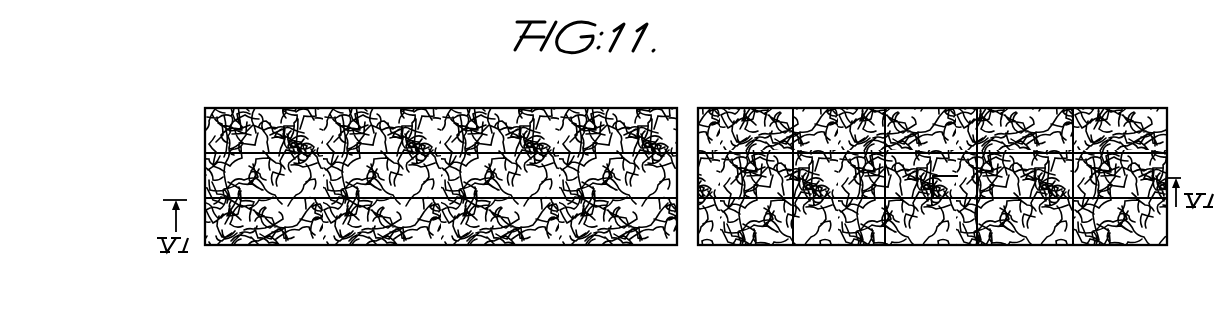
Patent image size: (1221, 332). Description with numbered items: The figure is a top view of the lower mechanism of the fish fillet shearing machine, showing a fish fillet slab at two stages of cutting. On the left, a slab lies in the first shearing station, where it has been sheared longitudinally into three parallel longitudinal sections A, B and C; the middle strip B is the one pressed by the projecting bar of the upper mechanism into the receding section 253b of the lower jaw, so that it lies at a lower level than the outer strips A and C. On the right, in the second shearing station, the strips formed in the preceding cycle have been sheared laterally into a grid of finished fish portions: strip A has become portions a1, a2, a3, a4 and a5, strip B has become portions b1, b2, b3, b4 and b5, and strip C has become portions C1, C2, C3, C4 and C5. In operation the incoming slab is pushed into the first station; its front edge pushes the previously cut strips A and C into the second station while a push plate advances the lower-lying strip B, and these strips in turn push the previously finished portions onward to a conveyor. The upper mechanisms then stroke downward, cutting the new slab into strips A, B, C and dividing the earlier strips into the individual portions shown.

The receding section 253b is at (206, 198).
The longitudinal section A is at (404, 125).
The longitudinal section B is at (453, 162).
The longitudinal section C is at (441, 238).
The finished fish portion a1 is at (716, 125).
The finished fish portion a2 is at (815, 125).
The finished fish portion a3 is at (912, 125).
The finished fish portion a4 is at (1008, 125).
The finished fish portion a5 is at (1098, 125).
The finished fish portion b1 is at (737, 160).
The finished fish portion b2 is at (838, 160).
The finished fish portion b3 is at (953, 160).
The finished fish portion b4 is at (1028, 160).
The finished fish portion b5 is at (1125, 160).
The finished fish portion C1 is at (748, 238).
The finished fish portion C2 is at (864, 238).
The finished fish portion C3 is at (961, 238).
The finished fish portion C4 is at (1052, 238).
The finished fish portion C5 is at (1144, 238).